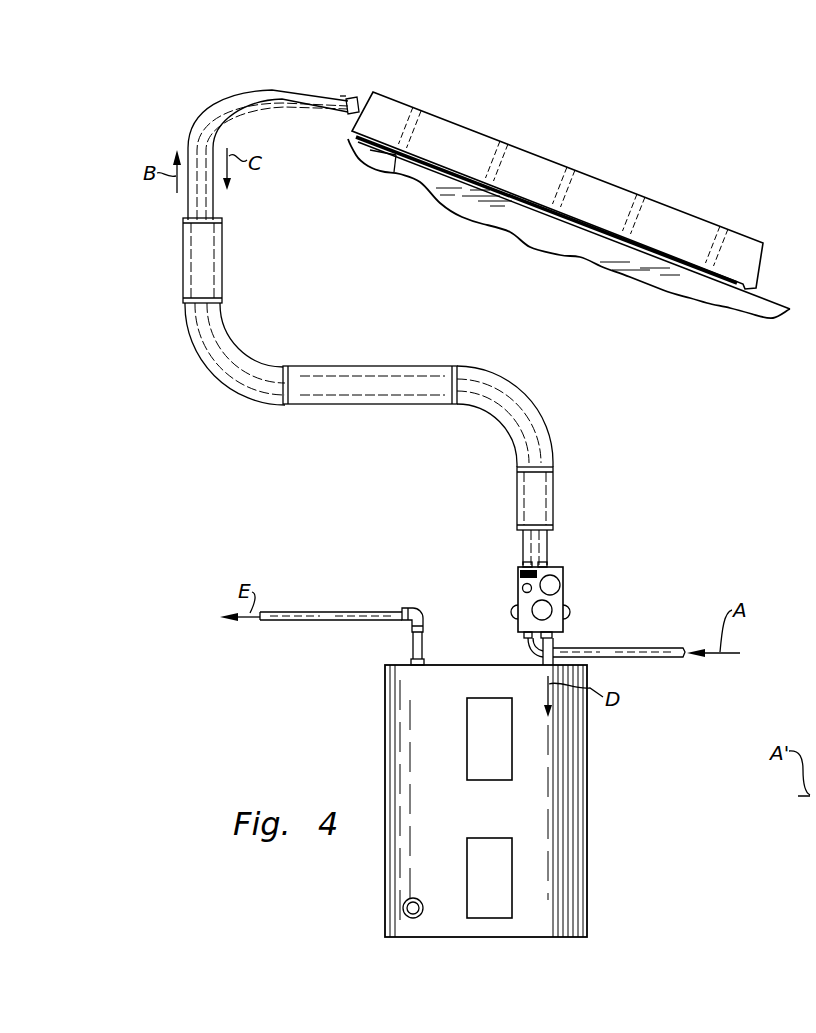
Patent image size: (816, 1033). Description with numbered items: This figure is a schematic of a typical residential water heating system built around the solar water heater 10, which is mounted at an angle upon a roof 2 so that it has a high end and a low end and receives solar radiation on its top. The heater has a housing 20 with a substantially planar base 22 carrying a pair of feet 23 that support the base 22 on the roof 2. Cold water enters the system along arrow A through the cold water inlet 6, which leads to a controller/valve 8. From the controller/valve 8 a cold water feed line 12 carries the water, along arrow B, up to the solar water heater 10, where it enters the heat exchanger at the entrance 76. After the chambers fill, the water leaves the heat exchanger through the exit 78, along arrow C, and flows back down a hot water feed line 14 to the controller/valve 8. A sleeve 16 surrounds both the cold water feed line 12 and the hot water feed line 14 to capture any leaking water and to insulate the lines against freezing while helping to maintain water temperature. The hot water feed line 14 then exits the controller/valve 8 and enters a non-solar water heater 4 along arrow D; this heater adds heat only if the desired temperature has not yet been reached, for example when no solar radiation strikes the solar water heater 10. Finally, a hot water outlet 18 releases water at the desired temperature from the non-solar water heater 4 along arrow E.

The roof 2 is at (708, 287).
The non-solar water heater 4 is at (447, 773).
The cold water inlet 6 is at (607, 648).
The controller/valve 8 is at (565, 593).
The solar water heater 10 is at (652, 166).
The cold water feed line 12 is at (218, 104).
The hot water feed line 14 is at (214, 211).
The sleeve 16 is at (408, 386).
The hot water outlet 18 is at (343, 612).
The housing 20 is at (433, 128).
The base 22 is at (346, 135).
The feet 23 is at (393, 172).
The entrance 76 is at (339, 82).
The exit 78 is at (358, 98).